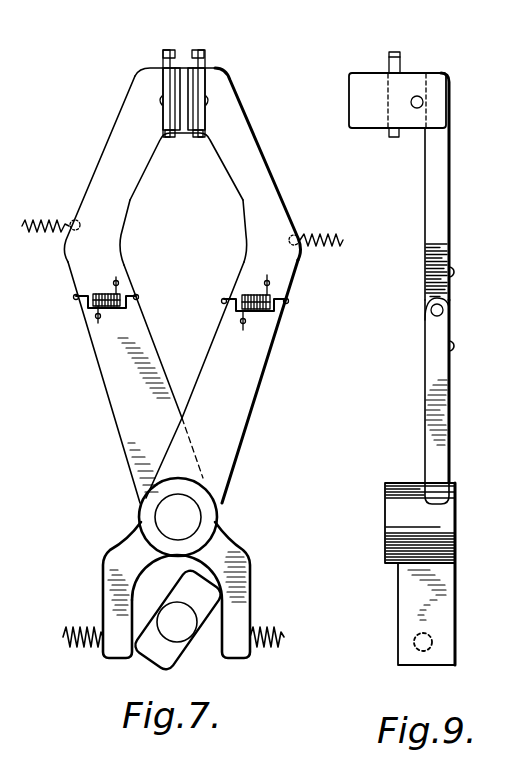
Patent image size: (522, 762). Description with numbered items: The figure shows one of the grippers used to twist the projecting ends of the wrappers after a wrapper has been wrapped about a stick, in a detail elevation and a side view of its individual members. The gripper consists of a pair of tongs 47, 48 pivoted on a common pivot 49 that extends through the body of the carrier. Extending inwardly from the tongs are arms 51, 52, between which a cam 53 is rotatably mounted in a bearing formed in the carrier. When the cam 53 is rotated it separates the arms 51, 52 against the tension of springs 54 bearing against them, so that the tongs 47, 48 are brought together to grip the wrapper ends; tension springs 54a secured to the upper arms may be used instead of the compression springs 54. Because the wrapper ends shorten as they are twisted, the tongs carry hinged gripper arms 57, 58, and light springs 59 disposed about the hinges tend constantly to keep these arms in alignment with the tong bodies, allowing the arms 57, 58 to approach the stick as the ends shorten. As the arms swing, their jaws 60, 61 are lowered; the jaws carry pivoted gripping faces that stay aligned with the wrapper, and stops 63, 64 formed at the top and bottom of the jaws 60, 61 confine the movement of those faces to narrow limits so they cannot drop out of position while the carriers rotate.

In FIG. 7, the gripping tong 47 is at (123, 423).
In FIG. 7, the gripping tong 48 is at (232, 417).
In FIG. 9, the gripping tong 48 is at (450, 400).
In FIG. 7, the pivot 49 is at (168, 510).
In FIG. 7, the arm 51 is at (108, 578).
In FIG. 7, the arm 52 is at (223, 582).
In FIG. 9, the arm 52 is at (448, 615).
In FIG. 7, the cam 53 is at (158, 653).
In FIG. 7, the compression spring 54 is at (63, 637).
In FIG. 9, the compression spring 54 is at (433, 642).
In FIG. 7, the tension spring 54a is at (335, 224).
In FIG. 7, the hinged gripper arm 57 is at (97, 165).
In FIG. 7, the hinged gripper arm 58 is at (275, 177).
In FIG. 9, the hinged gripper arm 58 is at (442, 193).
In FIG. 7, the spring 59 is at (103, 296).
In FIG. 9, the spring 59 is at (450, 308).
In FIG. 7, the jaw 60 is at (163, 85).
In FIG. 7, the jaw 61 is at (203, 82).
In FIG. 9, the jaw 61 is at (357, 105).
In FIG. 7, the stop 63 is at (170, 50).
In FIG. 9, the stop 63 is at (397, 52).
In FIG. 7, the stop 64 is at (173, 137).
In FIG. 9, the stop 64 is at (395, 138).